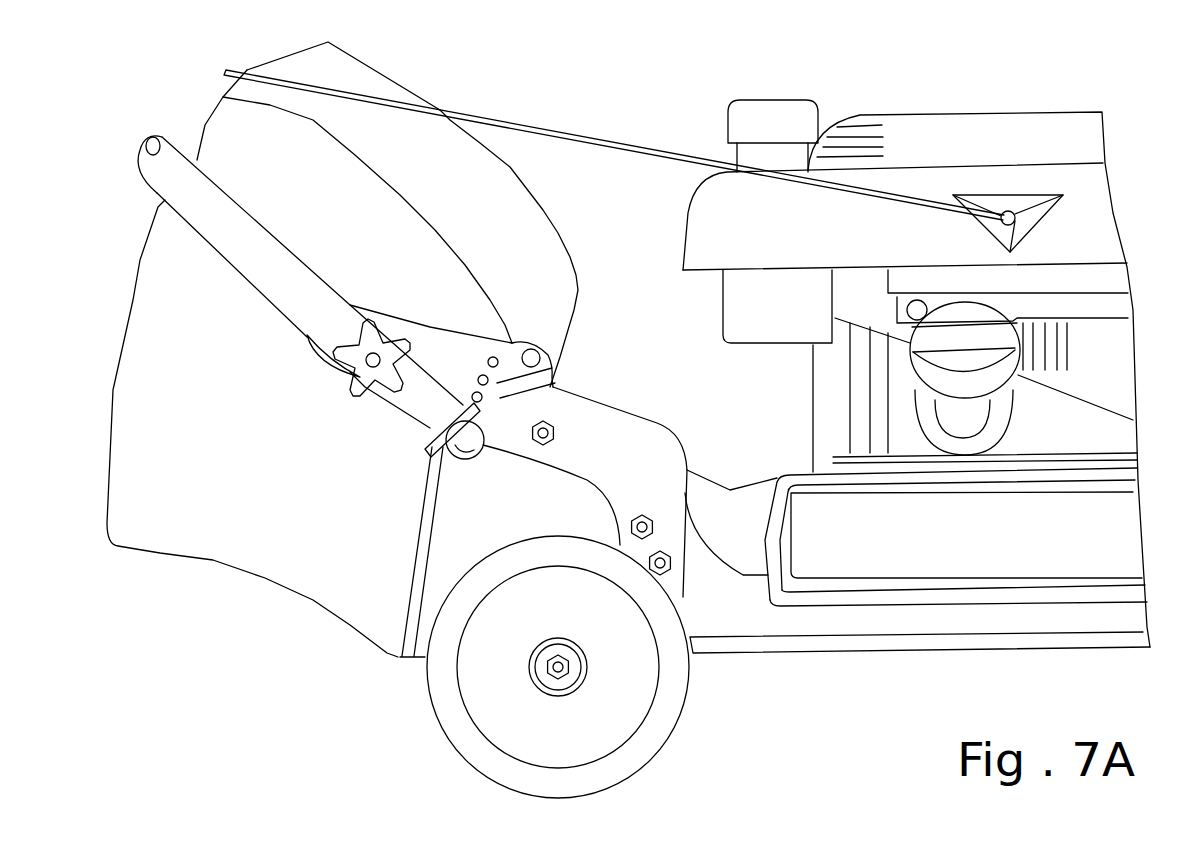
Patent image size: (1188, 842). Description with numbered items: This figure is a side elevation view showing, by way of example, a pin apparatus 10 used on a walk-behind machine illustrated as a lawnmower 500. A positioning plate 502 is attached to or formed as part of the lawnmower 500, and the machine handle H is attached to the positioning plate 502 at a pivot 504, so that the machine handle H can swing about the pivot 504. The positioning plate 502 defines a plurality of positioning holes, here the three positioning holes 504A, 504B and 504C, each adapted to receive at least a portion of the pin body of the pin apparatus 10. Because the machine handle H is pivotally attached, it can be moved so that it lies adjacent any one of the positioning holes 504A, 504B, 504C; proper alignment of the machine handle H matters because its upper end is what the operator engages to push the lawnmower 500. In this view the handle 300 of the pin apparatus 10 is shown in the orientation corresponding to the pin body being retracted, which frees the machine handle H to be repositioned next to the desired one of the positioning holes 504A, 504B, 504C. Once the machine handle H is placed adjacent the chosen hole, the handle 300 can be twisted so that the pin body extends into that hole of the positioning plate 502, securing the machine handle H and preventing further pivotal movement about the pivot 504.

The pin apparatus 10 is at (417, 465).
The handle 300 is at (433, 422).
The lawnmower 500 is at (640, 127).
The positioning plate 502 is at (457, 333).
The pivot 504 is at (350, 385).
The positioning hole 504A is at (498, 359).
The positioning hole 504B is at (488, 379).
The positioning hole 504C is at (482, 396).
The machine handle H is at (157, 198).